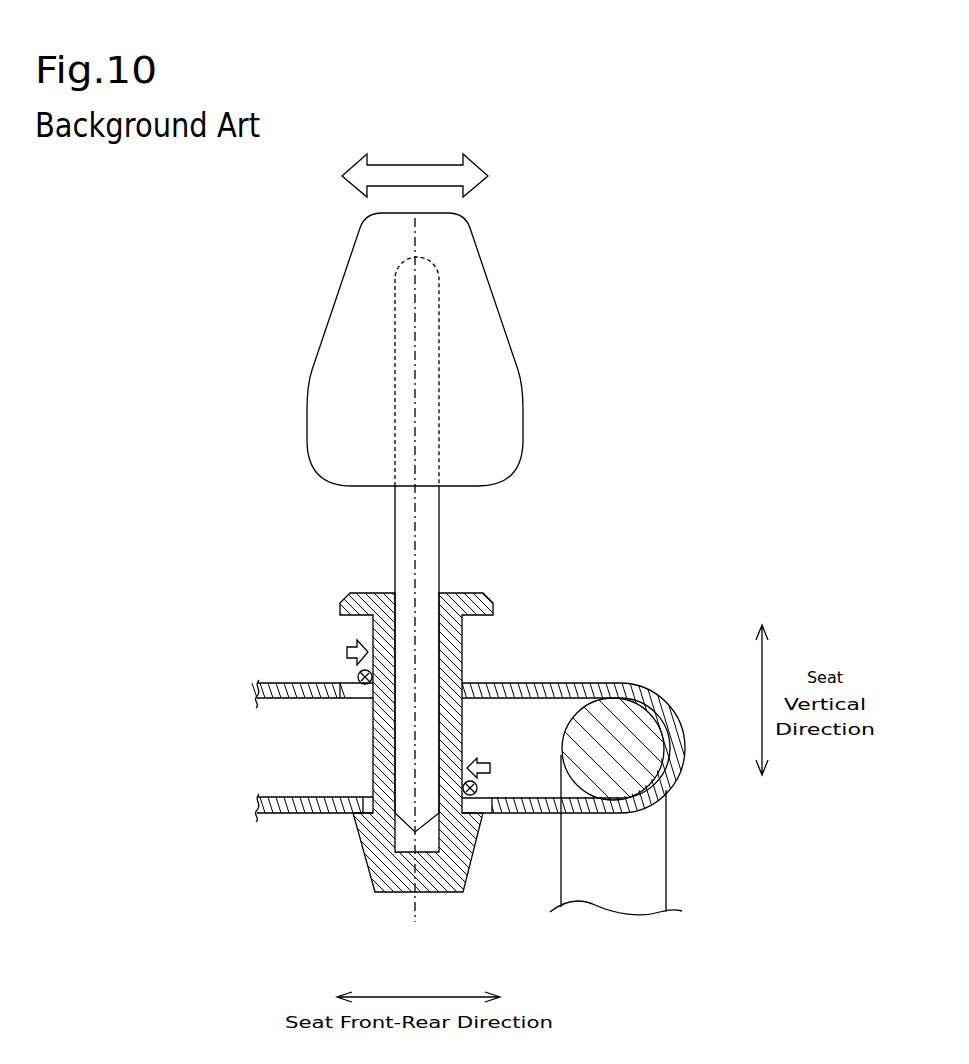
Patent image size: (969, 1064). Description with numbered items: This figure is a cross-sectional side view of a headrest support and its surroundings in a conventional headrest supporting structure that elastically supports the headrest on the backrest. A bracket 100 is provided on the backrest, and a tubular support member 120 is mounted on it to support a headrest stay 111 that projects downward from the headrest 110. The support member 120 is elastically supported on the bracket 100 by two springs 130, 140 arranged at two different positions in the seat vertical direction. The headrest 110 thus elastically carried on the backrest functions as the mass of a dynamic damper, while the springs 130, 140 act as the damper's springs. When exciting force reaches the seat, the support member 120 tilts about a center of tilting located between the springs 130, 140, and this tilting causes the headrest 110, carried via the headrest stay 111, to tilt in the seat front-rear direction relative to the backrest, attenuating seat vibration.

The bracket 100 is at (593, 800).
The headrest 110 is at (508, 391).
The headrest stay 111 is at (440, 535).
The tubular support member 120 is at (452, 636).
The spring 130 is at (358, 675).
The spring 140 is at (478, 787).